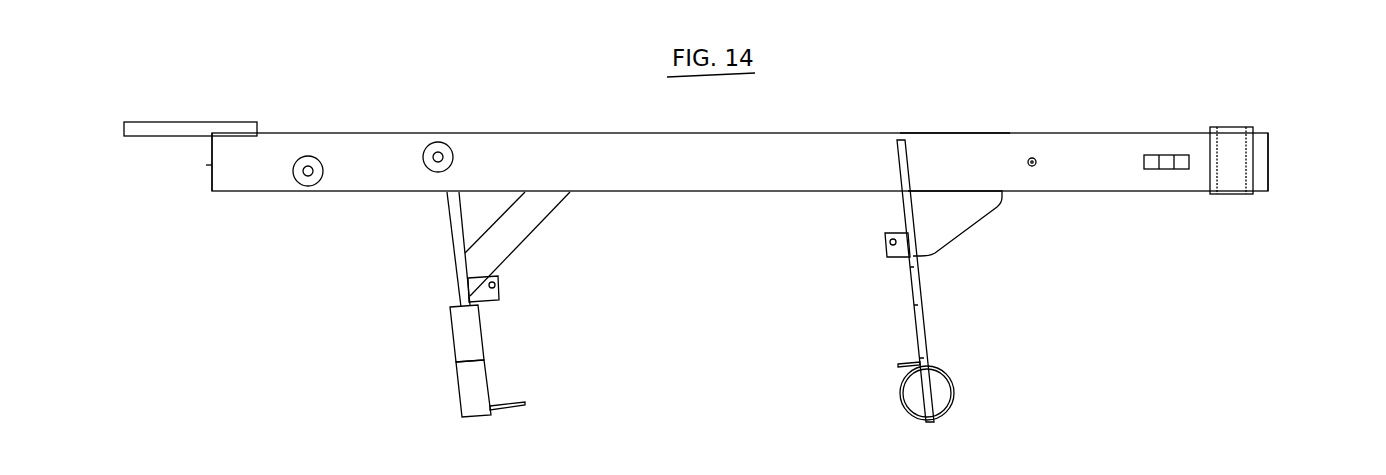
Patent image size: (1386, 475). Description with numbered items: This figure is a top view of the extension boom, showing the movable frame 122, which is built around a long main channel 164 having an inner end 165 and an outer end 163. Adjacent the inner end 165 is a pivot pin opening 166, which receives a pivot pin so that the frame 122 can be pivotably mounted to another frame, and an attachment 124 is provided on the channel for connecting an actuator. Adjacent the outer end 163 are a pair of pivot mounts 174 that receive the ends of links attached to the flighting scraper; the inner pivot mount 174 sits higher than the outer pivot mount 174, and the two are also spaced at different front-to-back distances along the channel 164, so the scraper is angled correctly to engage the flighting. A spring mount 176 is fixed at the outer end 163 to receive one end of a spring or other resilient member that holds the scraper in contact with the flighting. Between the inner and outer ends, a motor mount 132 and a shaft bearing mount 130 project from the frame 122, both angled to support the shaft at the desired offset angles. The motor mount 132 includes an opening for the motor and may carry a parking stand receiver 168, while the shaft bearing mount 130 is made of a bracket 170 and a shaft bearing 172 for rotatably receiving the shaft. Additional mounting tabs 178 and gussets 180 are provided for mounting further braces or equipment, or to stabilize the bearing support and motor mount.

The movable frame 122 is at (683, 173).
The attachment 124 is at (1155, 155).
The shaft bearing mount 130 is at (480, 343).
The motor mount 132 is at (920, 308).
The outer end 163 is at (212, 185).
The main channel 164 is at (958, 143).
The inner end 165 is at (1268, 160).
The pivot pin opening 166 is at (1230, 194).
The parking stand receiver 168 is at (903, 403).
The bracket 170 is at (460, 245).
The shaft bearing 172 is at (453, 328).
The pivot mounts 174 is at (306, 164).
The spring mount 176 is at (192, 126).
The mounting tabs 178 is at (498, 296).
The gussets 180 is at (518, 230).